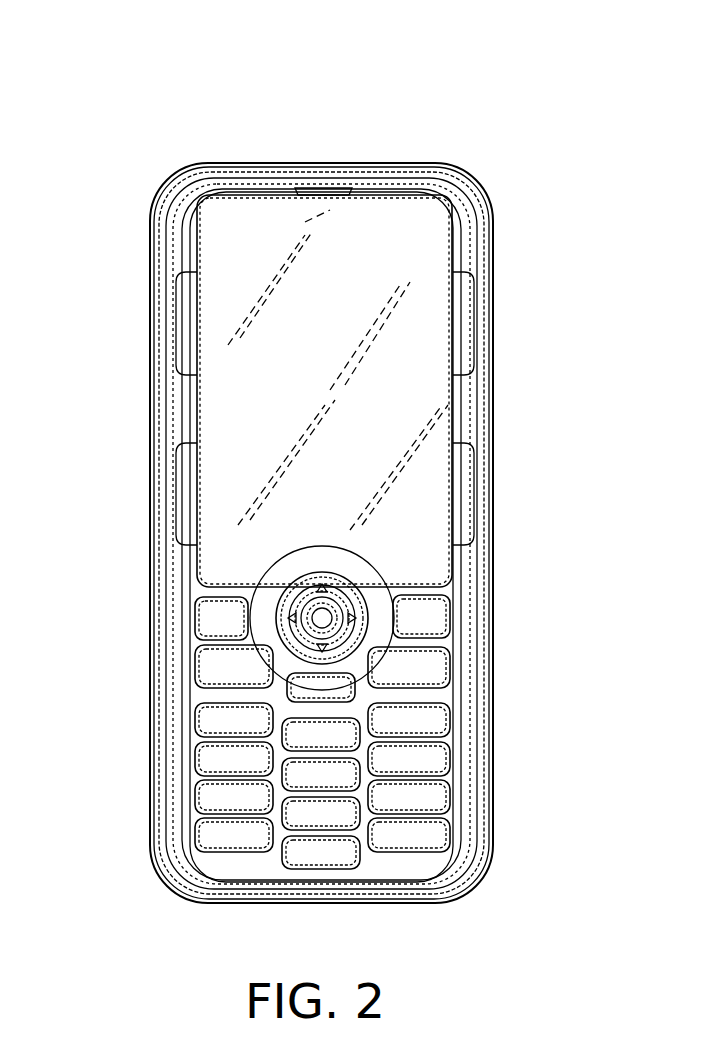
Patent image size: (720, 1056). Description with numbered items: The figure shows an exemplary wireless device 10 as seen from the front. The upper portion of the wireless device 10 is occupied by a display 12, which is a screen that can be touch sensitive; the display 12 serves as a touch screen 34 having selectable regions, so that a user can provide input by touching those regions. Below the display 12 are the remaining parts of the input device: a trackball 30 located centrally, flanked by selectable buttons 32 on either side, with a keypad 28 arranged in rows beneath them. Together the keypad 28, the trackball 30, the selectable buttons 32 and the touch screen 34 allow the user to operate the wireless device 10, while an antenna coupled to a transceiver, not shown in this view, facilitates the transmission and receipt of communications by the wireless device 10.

The wireless device 10 is at (166, 118).
The display 12 is at (412, 271).
The touch screen 34 is at (412, 433).
The trackball 30 is at (332, 618).
The selectable buttons 32 is at (218, 617).
The keypad 28 is at (428, 720).